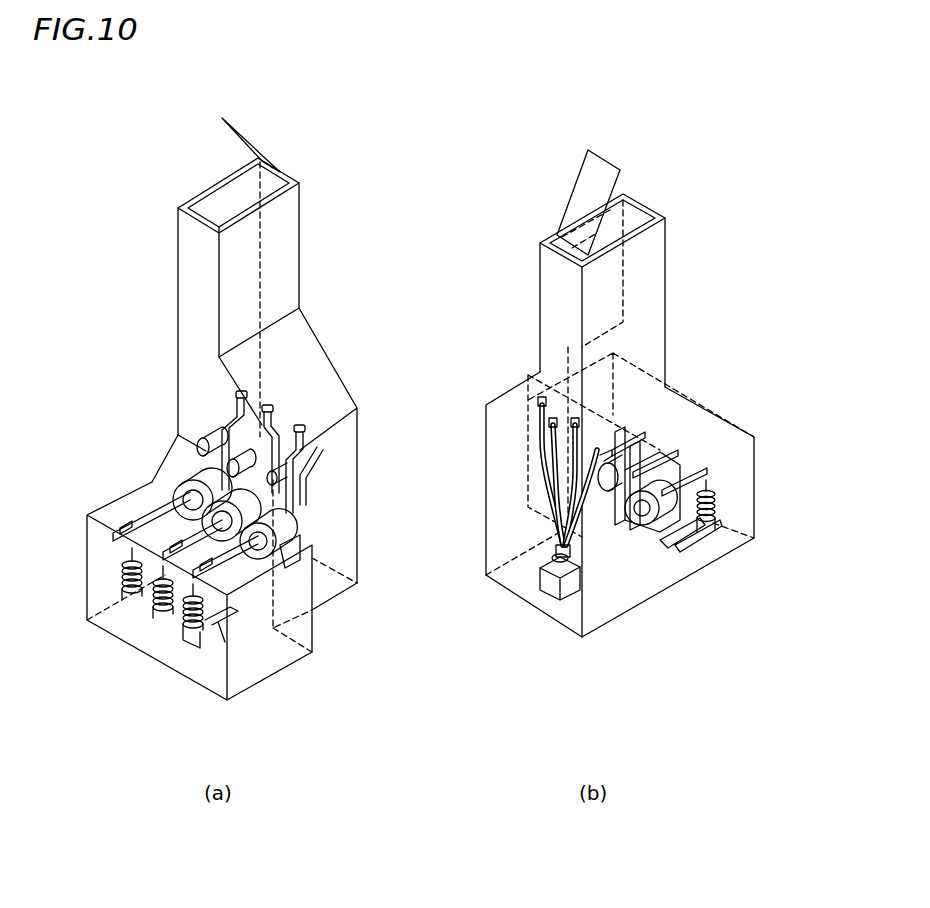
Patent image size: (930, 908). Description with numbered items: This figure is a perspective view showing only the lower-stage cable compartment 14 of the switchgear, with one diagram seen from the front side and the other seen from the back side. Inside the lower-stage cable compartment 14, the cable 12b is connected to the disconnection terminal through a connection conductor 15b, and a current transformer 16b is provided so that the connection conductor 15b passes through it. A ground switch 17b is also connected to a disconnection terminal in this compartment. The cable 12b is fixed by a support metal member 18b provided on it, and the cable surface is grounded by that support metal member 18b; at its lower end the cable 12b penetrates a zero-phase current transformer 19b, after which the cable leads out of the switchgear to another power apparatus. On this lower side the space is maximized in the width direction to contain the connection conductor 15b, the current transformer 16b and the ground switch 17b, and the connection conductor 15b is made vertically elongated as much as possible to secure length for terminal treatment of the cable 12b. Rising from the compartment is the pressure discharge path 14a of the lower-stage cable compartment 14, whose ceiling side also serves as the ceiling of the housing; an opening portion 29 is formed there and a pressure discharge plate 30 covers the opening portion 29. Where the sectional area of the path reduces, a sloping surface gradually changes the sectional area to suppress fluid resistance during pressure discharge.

The cable 12b is at (312, 487).
The lower-stage cable compartment 14 is at (270, 660).
The pressure discharge path 14a is at (188, 282).
The connection conductor 15b is at (165, 512).
The current transformer 16b is at (190, 467).
The ground switch 17b is at (203, 650).
The support metal member 18b is at (537, 568).
The zero-phase current transformer 19b is at (250, 583).
The opening portion 29 is at (227, 197).
The pressure discharge plate 30 is at (263, 150).